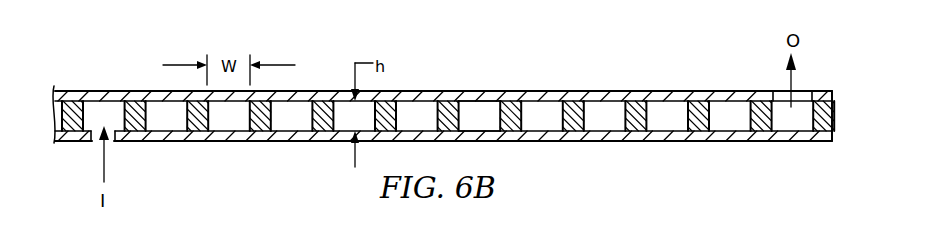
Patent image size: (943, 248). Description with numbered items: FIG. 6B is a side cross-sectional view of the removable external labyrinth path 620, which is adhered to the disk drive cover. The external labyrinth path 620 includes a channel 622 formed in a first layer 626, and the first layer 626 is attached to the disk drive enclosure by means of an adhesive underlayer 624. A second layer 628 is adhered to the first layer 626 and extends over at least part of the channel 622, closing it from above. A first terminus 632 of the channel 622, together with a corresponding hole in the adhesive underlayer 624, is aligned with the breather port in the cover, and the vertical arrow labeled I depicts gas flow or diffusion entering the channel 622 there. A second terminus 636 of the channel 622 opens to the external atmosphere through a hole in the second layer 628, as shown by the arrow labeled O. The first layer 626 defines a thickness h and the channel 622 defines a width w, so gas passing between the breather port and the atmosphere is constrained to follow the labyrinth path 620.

The external labyrinth path 620 is at (134, 54).
The channel 622 is at (478, 115).
The adhesive underlayer 624 is at (662, 142).
The first layer 626 is at (560, 112).
The second layer 628 is at (605, 92).
The first terminus 632 is at (117, 137).
The second terminus 636 is at (798, 95).